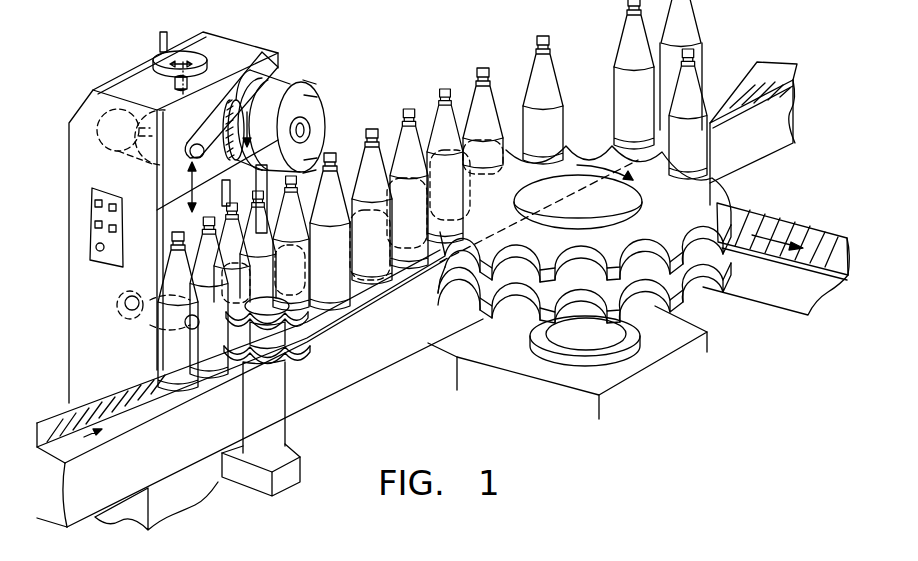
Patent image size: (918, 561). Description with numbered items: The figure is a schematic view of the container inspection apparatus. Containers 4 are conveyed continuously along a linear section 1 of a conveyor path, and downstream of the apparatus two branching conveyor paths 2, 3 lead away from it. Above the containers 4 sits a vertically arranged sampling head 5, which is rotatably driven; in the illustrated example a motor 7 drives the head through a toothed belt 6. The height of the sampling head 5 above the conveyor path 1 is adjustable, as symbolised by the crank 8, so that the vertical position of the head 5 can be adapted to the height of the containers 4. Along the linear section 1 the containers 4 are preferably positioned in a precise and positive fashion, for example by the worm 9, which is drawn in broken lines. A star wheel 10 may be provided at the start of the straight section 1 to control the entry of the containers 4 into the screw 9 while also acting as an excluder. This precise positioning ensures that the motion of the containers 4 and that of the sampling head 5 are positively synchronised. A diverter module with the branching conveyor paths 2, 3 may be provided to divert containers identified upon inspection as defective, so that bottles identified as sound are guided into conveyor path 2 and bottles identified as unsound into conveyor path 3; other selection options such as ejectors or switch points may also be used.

The linear section of conveyor path 1 is at (352, 367).
The branching conveyor path 2 is at (807, 232).
The branching conveyor path 3 is at (723, 90).
The containers 4 is at (407, 143).
The sampling head 5 is at (311, 105).
The toothed belt 6 is at (245, 68).
The motor 7 is at (100, 118).
The crank 8 is at (180, 48).
The worm 9 is at (368, 255).
The star wheel 10 is at (288, 362).